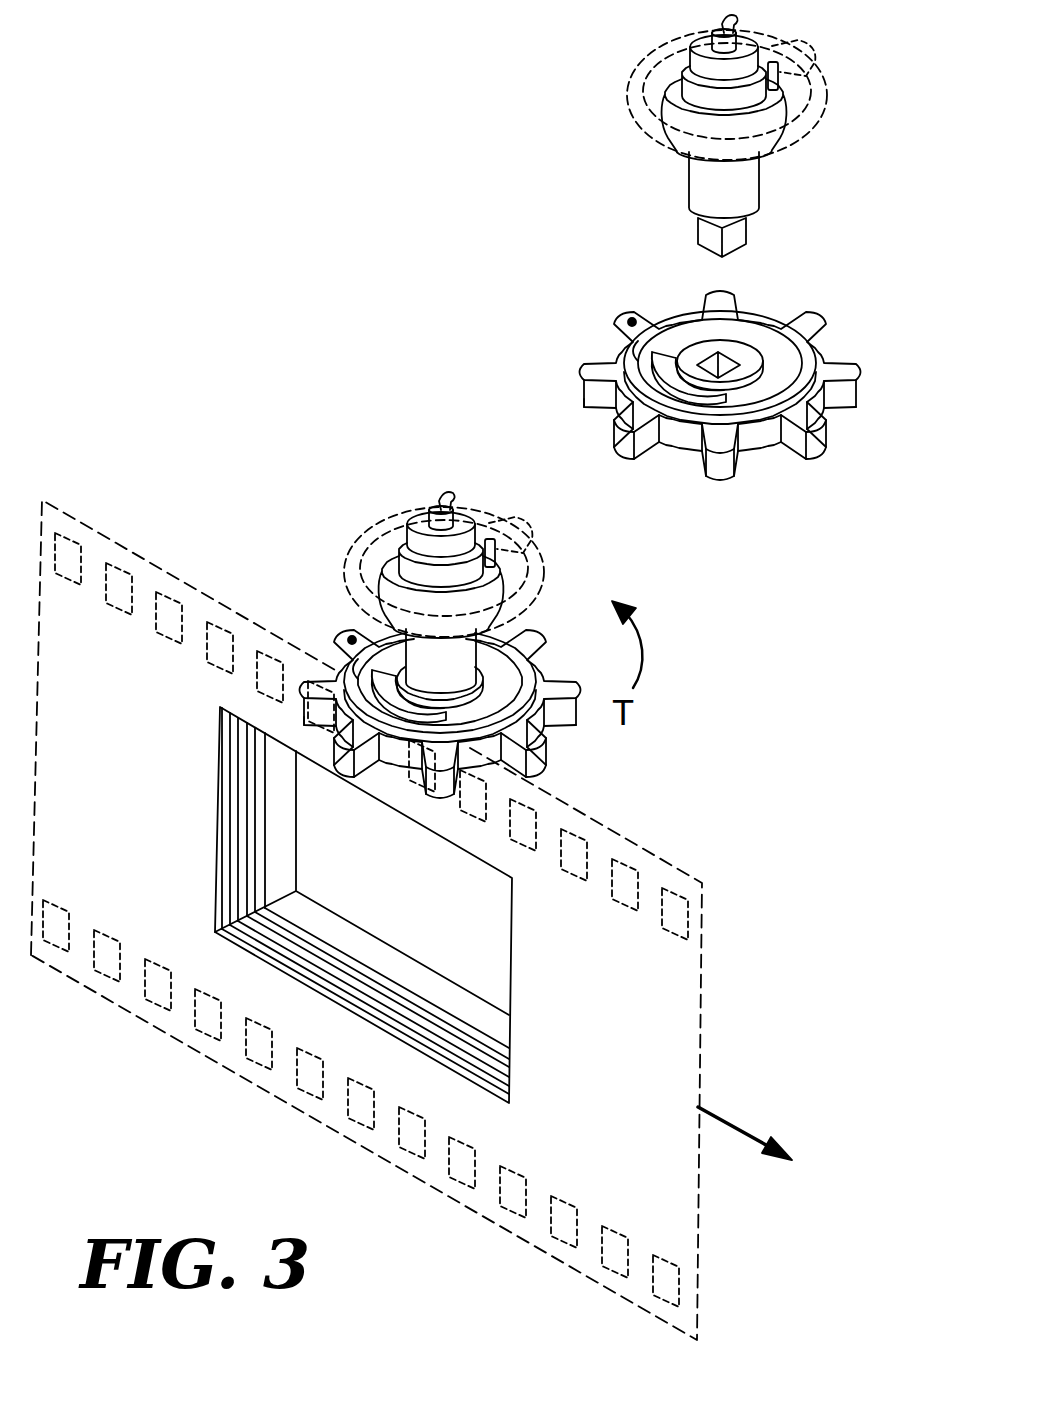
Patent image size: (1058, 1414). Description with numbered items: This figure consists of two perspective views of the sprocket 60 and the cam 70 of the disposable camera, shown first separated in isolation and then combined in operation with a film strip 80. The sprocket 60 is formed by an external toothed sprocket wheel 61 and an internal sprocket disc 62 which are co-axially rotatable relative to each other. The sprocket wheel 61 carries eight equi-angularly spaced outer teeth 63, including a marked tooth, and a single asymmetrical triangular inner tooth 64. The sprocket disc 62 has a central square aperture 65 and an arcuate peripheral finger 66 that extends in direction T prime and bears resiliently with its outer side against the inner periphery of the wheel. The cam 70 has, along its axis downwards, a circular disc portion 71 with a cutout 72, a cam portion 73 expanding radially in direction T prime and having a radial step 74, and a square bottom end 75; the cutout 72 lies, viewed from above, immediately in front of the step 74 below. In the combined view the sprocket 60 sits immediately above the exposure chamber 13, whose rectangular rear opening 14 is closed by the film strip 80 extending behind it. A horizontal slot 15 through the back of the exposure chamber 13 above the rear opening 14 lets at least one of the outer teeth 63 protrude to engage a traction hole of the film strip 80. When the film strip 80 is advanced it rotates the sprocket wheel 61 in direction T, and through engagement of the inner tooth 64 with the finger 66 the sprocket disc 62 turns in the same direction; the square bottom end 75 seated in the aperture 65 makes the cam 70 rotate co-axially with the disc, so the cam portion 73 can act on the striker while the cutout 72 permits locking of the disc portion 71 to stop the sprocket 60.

The exposure chamber 13 is at (377, 1015).
The rear opening 14 is at (505, 938).
The horizontal slot 15 is at (393, 770).
The sprocket 60 is at (603, 528).
The sprocket wheel 61 is at (752, 443).
The sprocket disc 62 is at (785, 366).
The outer teeth 63 is at (597, 393).
The inner tooth 64 is at (640, 356).
The central square aperture 65 is at (735, 362).
The arcuate peripheral finger 66 is at (647, 380).
The cam 70 is at (639, 348).
The circular disc portion 71 is at (648, 58).
The cutout 72 is at (788, 44).
The cam portion 73 is at (673, 107).
The radial step 74 is at (778, 86).
The square bottom end 75 is at (740, 233).
The film strip 80 is at (680, 985).